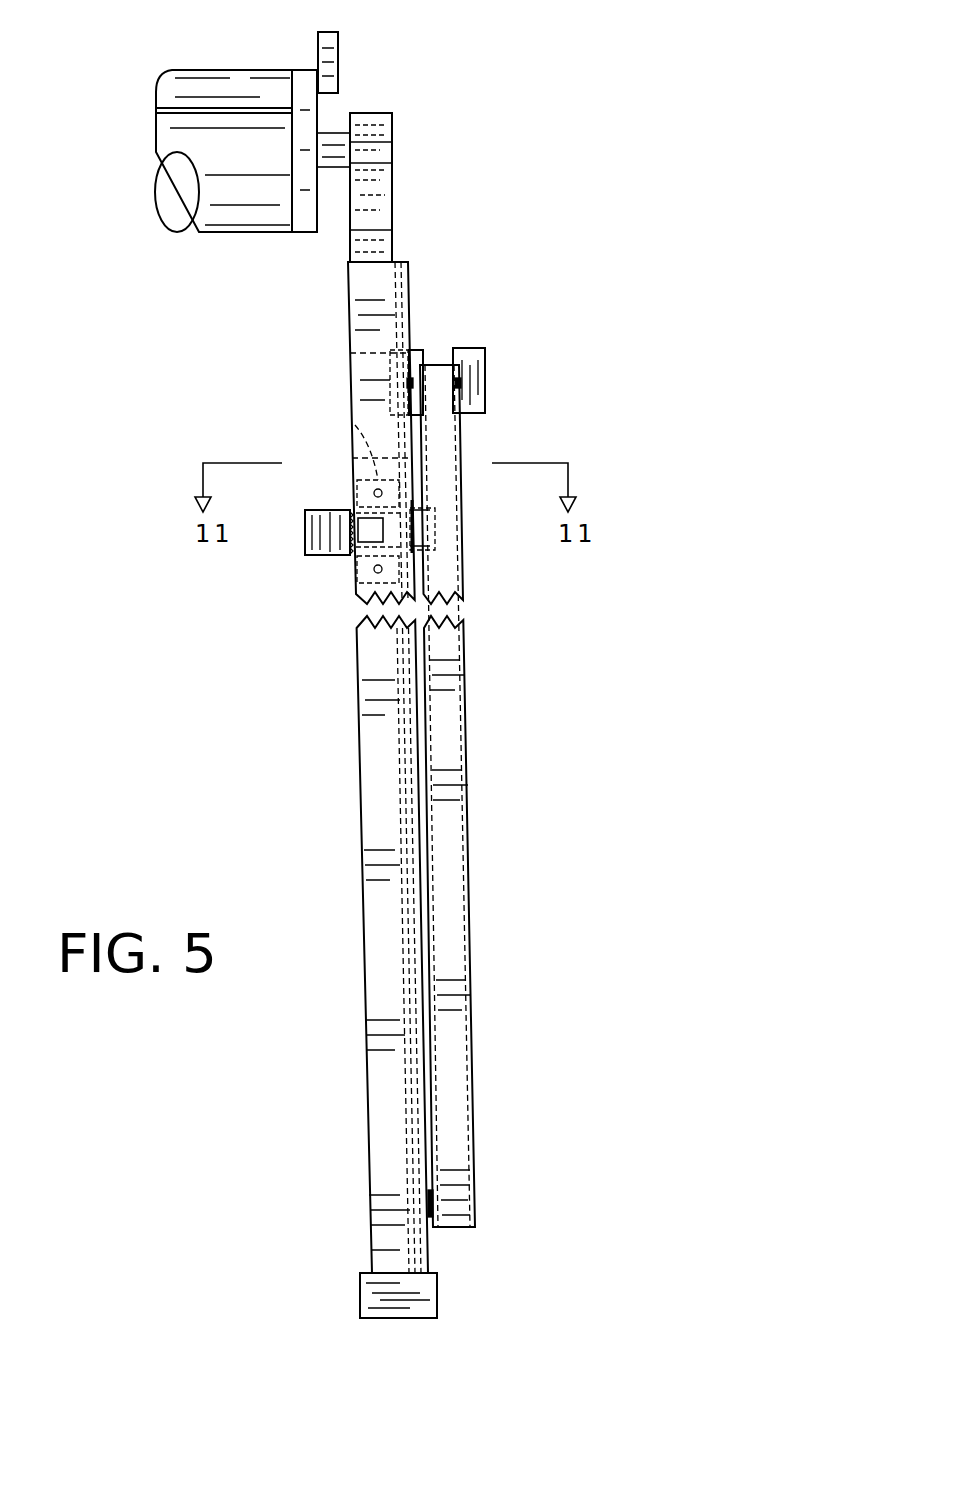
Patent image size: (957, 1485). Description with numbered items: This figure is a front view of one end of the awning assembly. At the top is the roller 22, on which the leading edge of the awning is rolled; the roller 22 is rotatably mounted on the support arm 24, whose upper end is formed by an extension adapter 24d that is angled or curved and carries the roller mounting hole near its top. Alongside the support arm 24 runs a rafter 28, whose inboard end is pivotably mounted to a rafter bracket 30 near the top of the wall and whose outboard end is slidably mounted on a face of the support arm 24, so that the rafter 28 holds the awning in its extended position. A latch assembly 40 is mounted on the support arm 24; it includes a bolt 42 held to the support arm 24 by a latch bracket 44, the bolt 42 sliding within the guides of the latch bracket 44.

The roller 22 is at (240, 70).
The extension adapter 24d is at (393, 210).
The support arm 24 is at (375, 733).
The rafter 28 is at (445, 680).
The rafter bracket 30 is at (480, 363).
The latch assembly 40 is at (312, 573).
The bolt 42 is at (350, 512).
The latch bracket 44 is at (362, 430).